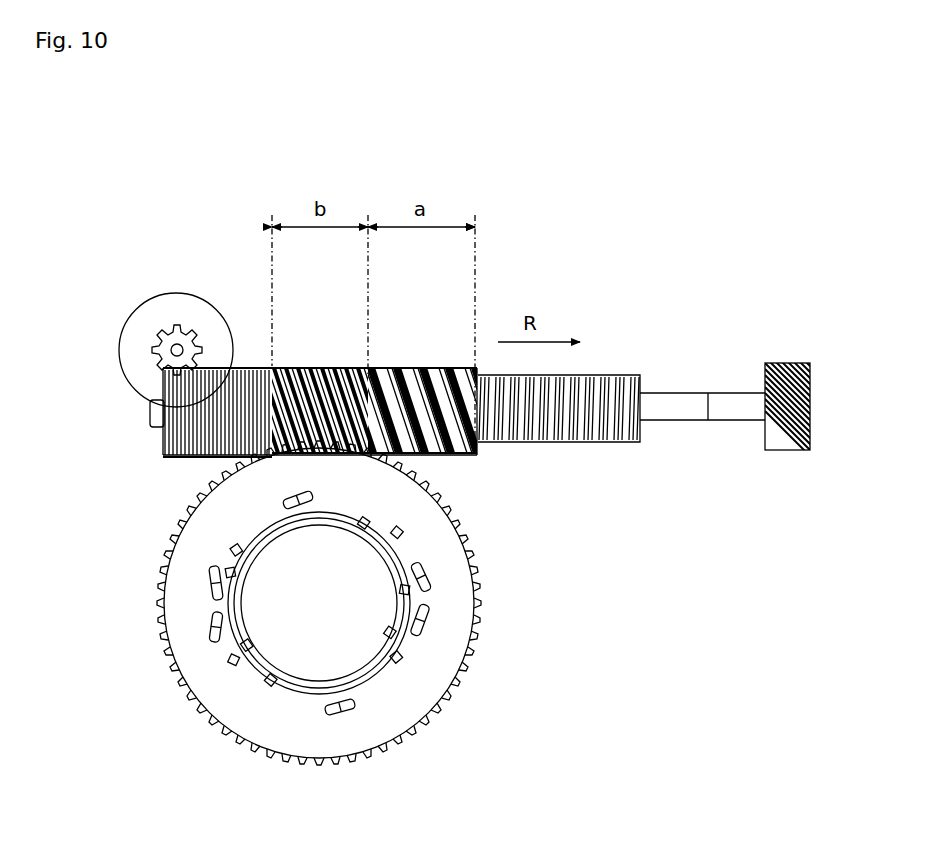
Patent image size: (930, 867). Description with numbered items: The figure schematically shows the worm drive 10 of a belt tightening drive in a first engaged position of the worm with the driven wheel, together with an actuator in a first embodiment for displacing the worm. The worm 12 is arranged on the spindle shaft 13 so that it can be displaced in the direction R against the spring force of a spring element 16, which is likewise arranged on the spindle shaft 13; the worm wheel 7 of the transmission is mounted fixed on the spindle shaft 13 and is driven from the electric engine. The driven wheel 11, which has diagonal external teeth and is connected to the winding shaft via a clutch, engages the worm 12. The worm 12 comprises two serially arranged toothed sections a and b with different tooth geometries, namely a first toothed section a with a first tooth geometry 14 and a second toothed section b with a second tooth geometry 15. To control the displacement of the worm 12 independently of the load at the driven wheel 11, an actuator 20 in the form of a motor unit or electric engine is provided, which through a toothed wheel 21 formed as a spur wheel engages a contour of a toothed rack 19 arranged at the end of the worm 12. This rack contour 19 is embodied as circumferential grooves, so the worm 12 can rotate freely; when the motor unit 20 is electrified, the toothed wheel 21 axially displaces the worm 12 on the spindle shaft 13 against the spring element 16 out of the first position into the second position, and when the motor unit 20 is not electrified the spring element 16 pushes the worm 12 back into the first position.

The worm wheel 7 is at (780, 443).
The worm drive 10 is at (413, 460).
The driven wheel 11 is at (212, 632).
The worm 12 is at (305, 364).
The spindle shaft 13 is at (678, 388).
The first tooth geometry 14 is at (452, 363).
The second tooth geometry 15 is at (284, 365).
The spring element 16 is at (590, 373).
The contour of a toothed rack 19 is at (187, 453).
The actuator 20 is at (140, 313).
The toothed wheel 21 is at (157, 357).